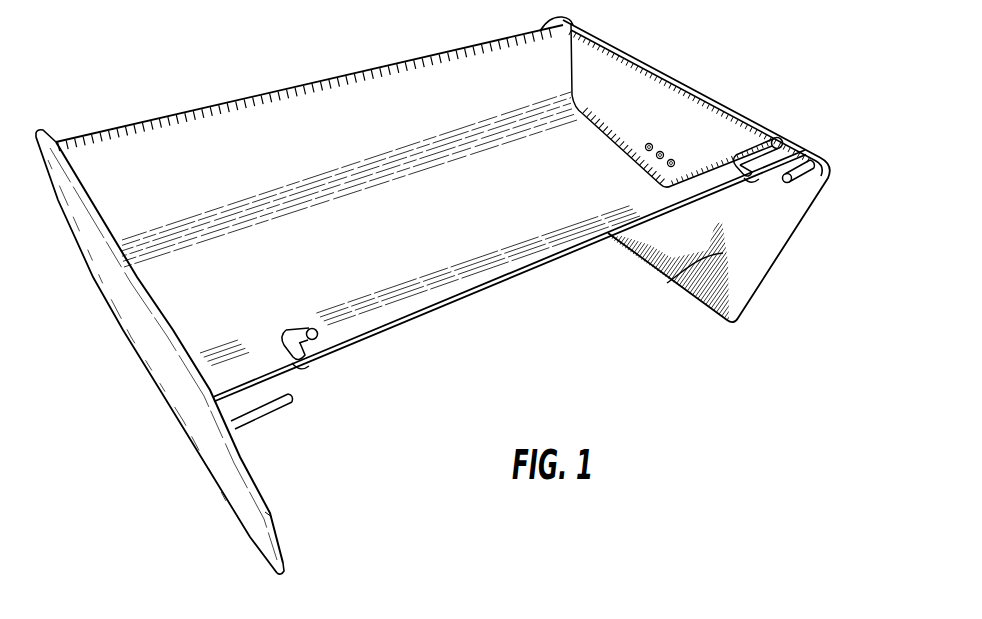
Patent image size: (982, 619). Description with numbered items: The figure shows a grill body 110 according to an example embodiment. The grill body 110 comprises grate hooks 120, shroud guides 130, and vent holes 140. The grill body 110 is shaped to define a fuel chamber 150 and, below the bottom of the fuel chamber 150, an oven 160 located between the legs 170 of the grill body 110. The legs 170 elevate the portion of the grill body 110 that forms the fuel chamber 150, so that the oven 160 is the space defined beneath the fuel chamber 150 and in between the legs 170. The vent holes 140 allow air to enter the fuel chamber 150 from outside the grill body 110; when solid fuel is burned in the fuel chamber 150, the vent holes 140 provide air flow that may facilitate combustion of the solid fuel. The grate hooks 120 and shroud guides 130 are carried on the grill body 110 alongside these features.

The grill body 110 is at (124, 66).
The grate hooks 120 is at (296, 327).
The shroud guides 130 is at (276, 404).
The vent holes 140 is at (650, 143).
The fuel chamber 150 is at (470, 225).
The oven 160 is at (476, 322).
The legs 170 is at (667, 283).